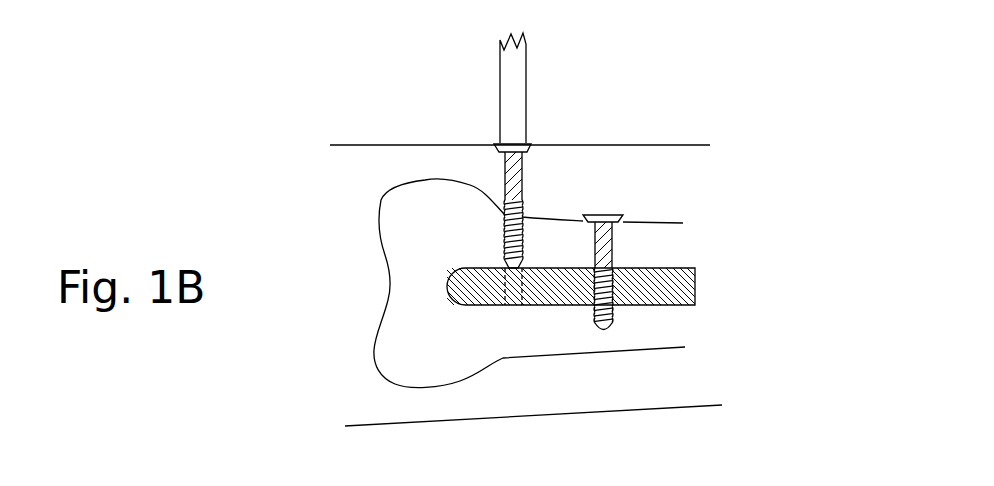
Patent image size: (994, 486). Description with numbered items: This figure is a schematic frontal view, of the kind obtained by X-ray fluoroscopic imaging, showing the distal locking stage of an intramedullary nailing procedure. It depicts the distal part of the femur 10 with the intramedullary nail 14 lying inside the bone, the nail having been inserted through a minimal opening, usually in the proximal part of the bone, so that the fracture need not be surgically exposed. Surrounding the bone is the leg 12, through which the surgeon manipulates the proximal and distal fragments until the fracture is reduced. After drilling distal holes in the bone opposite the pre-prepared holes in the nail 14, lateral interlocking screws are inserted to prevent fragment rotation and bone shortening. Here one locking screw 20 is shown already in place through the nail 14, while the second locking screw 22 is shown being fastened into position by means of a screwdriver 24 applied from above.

The femur 10 is at (518, 357).
The leg 12 is at (398, 425).
The intramedullary nail 14 is at (695, 268).
The locking screw 20 is at (612, 240).
The locking screw 22 is at (522, 177).
The screwdriver 24 is at (527, 110).